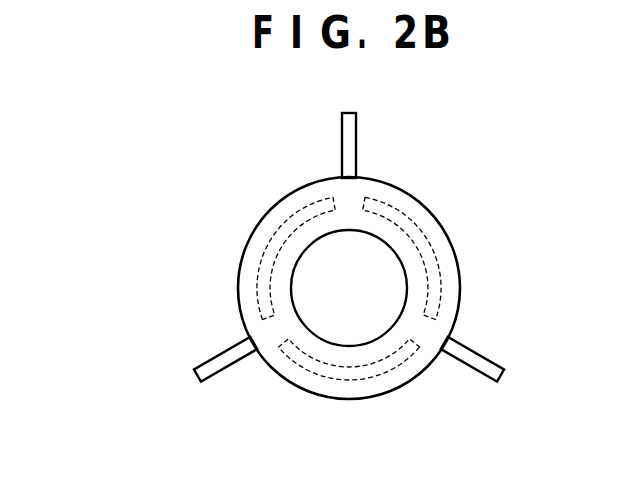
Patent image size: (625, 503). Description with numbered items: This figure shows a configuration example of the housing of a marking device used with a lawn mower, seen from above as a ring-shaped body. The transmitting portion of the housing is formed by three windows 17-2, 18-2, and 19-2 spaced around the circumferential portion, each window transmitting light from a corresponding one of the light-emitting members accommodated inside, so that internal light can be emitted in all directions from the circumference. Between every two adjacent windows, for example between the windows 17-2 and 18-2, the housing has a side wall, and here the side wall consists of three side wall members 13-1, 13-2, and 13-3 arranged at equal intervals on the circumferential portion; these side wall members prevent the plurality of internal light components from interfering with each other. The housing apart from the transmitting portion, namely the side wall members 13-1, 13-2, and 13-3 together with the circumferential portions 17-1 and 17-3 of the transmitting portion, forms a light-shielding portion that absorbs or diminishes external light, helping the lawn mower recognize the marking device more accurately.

The side wall member 13-1 is at (477, 355).
The side wall member 13-2 is at (223, 355).
The side wall member 13-3 is at (357, 150).
The circumferential portion 17-1 is at (310, 332).
The window 17-2 is at (343, 377).
The circumferential portion 17-3 is at (402, 387).
The window 18-2 is at (277, 240).
The window 19-2 is at (430, 243).